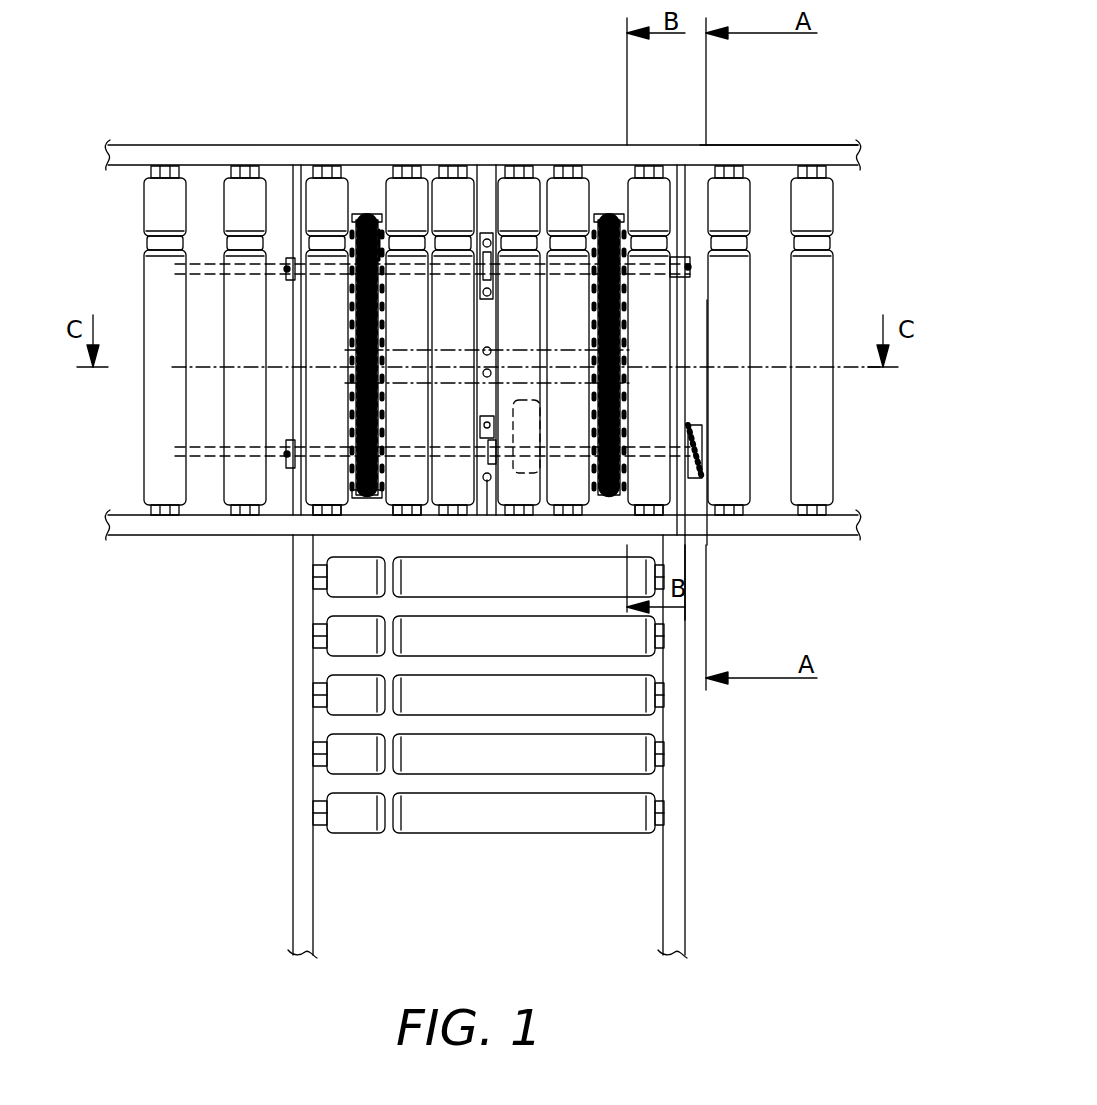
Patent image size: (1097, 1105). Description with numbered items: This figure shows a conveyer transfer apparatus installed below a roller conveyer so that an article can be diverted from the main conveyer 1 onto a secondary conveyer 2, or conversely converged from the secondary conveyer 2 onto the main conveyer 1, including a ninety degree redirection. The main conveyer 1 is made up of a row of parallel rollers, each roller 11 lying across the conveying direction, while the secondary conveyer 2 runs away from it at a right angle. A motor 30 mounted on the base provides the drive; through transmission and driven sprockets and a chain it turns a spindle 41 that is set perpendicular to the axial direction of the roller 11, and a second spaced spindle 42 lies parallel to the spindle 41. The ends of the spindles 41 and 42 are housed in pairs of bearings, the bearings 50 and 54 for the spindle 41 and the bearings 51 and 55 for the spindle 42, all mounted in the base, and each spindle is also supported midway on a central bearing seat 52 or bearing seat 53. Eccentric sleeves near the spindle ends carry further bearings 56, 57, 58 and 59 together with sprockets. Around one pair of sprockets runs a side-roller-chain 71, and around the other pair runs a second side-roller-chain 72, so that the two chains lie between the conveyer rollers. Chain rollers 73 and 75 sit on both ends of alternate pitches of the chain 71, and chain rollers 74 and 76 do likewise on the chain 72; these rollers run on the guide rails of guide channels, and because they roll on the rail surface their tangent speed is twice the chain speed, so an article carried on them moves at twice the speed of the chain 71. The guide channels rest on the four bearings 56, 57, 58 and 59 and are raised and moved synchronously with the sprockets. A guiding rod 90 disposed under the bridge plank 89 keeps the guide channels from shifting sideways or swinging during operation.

The main conveyer 1 is at (846, 147).
The secondary conveyer 2 is at (686, 714).
The roller 11 is at (745, 188).
The motor 30 is at (628, 500).
The spindle 41 is at (420, 498).
The spindle 42 is at (430, 270).
The bearing 50 is at (662, 502).
The bearing 51 is at (625, 250).
The bearing seat 52 is at (487, 500).
The bearing seat 53 is at (492, 247).
The bearing 54 is at (300, 507).
The bearing 55 is at (298, 240).
The bearing 56 is at (692, 597).
The bearing 57 is at (682, 268).
The bearing 58 is at (345, 498).
The bearing 59 is at (345, 232).
The side-roller-chain 71 is at (612, 220).
The side-roller-chain 72 is at (368, 218).
The chain roller 73 is at (626, 250).
The chain roller 74 is at (378, 228).
The chain roller 75 is at (598, 218).
The chain roller 76 is at (360, 218).
The bridge plank 89 is at (483, 350).
The guiding rod 90 is at (483, 373).